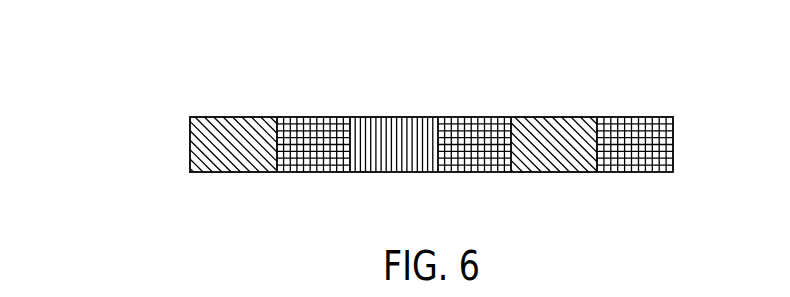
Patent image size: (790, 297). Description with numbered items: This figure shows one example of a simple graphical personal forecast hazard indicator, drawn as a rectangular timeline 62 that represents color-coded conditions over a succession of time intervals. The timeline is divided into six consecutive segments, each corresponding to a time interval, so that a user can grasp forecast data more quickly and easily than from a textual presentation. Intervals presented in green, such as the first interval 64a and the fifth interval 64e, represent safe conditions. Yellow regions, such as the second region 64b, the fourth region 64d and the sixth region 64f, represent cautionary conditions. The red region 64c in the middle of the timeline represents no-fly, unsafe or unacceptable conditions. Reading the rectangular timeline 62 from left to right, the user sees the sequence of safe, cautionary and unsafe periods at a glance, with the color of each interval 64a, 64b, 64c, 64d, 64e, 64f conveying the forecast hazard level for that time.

The rectangular timeline 62 is at (134, 52).
The green interval 64a is at (233, 117).
The yellow region 64b is at (315, 117).
The red region 64c is at (395, 117).
The yellow region 64d is at (475, 117).
The green interval 64e is at (555, 117).
The yellow region 64f is at (635, 117).